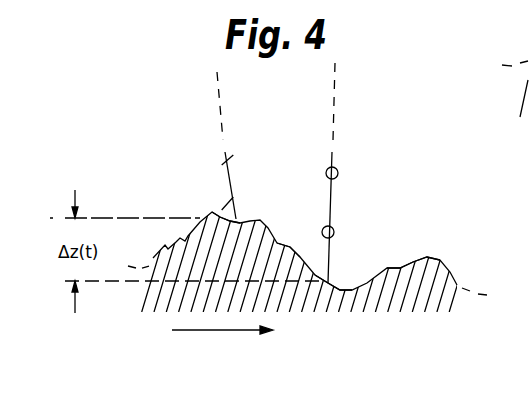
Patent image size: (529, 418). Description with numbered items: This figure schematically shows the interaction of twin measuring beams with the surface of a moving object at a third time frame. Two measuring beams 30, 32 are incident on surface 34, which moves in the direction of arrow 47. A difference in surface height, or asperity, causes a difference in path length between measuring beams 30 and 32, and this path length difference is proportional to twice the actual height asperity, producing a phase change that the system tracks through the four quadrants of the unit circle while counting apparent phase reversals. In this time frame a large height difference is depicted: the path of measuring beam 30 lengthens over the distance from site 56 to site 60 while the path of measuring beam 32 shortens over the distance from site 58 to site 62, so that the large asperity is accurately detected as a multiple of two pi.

The measuring beam 30 is at (333, 188).
The measuring beam 32 is at (231, 177).
The surface 34 is at (359, 230).
The arrow 47 is at (227, 333).
The surface site 56 is at (388, 267).
The surface site 58 is at (306, 219).
The surface site 60 is at (332, 281).
The surface site 62 is at (236, 219).